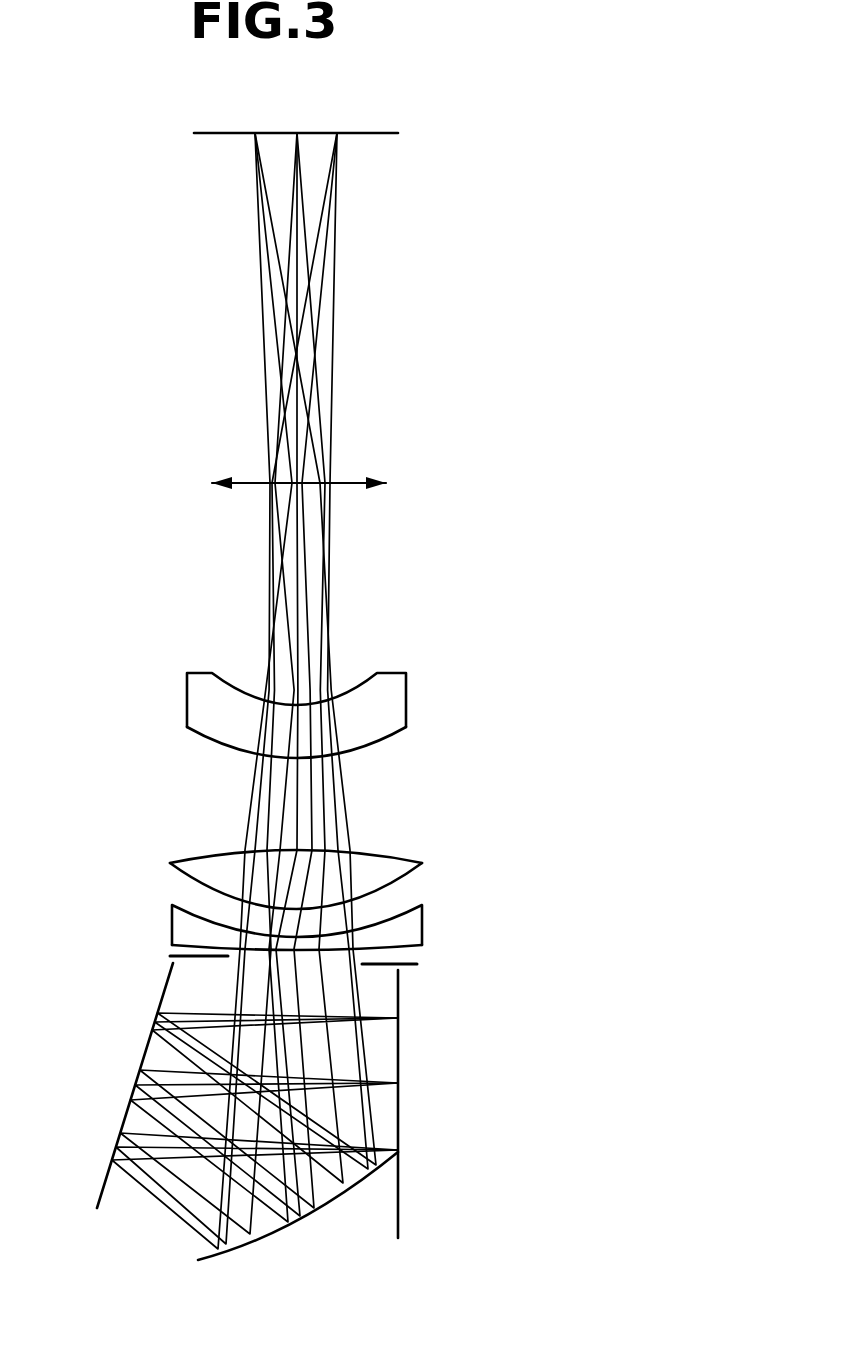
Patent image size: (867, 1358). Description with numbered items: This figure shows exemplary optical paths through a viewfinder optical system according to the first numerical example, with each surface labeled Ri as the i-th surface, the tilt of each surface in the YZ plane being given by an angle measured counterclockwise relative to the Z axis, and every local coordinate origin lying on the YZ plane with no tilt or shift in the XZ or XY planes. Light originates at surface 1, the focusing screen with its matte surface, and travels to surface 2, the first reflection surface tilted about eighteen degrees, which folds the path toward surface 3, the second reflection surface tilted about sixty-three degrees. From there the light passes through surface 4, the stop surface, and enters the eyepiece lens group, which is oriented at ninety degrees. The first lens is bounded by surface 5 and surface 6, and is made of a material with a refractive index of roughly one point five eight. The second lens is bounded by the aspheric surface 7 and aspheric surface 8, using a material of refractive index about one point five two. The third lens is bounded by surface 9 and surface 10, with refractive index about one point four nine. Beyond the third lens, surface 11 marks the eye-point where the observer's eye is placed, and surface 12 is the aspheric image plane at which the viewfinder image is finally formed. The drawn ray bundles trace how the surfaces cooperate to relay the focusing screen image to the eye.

The first surface 1 is at (400, 1052).
The second surface 2 is at (127, 1110).
The third surface 3 is at (270, 1236).
The fourth surface 4 is at (418, 966).
The fifth surface 5 is at (178, 946).
The sixth surface 6 is at (405, 913).
The seventh surface 7 is at (182, 871).
The eighth surface 8 is at (395, 858).
The ninth surface 9 is at (205, 736).
The tenth surface 10 is at (360, 685).
The eleventh surface 11 is at (376, 481).
The twelfth surface 12 is at (368, 133).